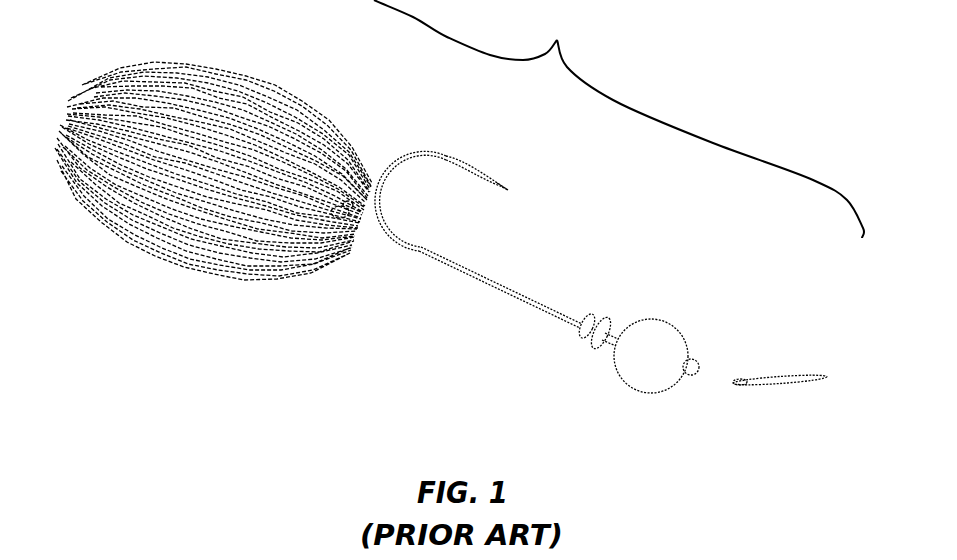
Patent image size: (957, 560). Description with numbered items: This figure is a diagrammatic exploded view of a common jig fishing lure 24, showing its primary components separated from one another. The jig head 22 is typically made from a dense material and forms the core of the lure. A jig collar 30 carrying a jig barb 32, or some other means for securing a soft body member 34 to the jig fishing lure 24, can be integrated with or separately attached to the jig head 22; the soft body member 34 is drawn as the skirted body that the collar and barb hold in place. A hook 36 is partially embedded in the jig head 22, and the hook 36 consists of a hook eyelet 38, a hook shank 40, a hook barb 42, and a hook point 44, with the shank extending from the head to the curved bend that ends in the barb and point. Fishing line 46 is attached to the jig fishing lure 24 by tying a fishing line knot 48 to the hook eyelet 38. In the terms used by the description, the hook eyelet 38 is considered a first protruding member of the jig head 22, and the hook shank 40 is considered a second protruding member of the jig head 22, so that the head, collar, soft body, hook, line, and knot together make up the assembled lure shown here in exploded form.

The jig head 22 is at (650, 367).
The jig fishing lure 24 is at (462, 230).
The jig collar 30 is at (610, 332).
The jig barb 32 is at (597, 348).
The soft body member 34 is at (183, 248).
The hook 36 is at (417, 247).
The hook eyelet 38 is at (688, 363).
The hook shank 40 is at (512, 290).
The hook barb 42 is at (472, 178).
The hook point 44 is at (508, 190).
The fishing line 46 is at (800, 380).
The fishing line knot 48 is at (743, 380).